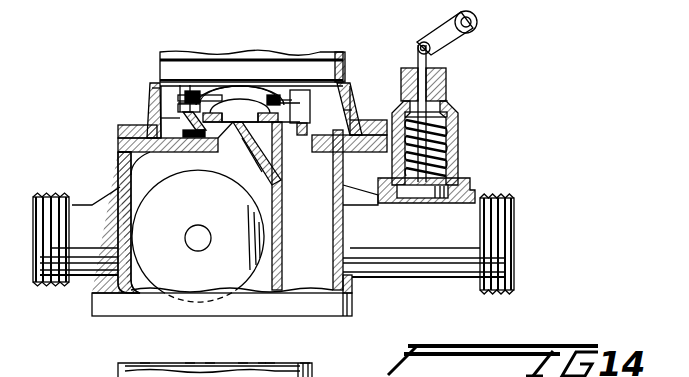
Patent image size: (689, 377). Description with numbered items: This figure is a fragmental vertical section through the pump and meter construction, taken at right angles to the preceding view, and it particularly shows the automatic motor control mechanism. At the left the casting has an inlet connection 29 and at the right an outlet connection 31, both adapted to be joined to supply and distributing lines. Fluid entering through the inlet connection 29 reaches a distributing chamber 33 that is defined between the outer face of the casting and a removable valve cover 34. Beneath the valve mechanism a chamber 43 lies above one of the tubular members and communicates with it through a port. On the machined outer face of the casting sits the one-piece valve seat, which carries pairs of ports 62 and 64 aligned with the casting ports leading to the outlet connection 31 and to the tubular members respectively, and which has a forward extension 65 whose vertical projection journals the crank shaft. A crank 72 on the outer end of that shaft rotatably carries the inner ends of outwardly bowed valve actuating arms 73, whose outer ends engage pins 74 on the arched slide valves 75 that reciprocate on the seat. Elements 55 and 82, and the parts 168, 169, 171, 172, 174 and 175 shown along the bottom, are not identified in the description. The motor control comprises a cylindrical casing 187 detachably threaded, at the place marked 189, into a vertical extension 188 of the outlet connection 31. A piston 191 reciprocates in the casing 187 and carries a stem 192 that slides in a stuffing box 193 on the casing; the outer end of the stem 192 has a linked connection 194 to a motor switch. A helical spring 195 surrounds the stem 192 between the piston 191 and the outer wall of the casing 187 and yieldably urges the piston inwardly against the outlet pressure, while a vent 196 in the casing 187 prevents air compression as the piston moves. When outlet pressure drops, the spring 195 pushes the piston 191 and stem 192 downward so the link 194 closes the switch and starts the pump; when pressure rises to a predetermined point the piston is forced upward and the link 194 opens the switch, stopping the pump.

The inlet connection 29 is at (84, 212).
The outlet connection 31 is at (513, 207).
The distributing chamber 33 is at (348, 110).
The valve cover 34 is at (148, 94).
The chamber 43 is at (307, 219).
The float 55 is at (240, 288).
The ports 62 is at (258, 140).
The ports 64 is at (305, 127).
The extension 65 is at (226, 140).
The crank 72 is at (165, 118).
The valve actuating arms 73 is at (222, 98).
The pins 74 is at (278, 100).
The slide valves 75 is at (283, 112).
The cover 82 is at (165, 68).
The base member 168 is at (268, 372).
The base end cap 169 is at (208, 372).
The base rib 171 is at (262, 372).
The base plate 172 is at (192, 372).
The base wall 174 is at (243, 372).
The base flange 175 is at (148, 376).
The cylindrical casing 187 is at (456, 160).
The vertical extension 188 is at (468, 190).
The threaded connection 189 is at (395, 195).
The piston 191 is at (435, 205).
The stem 192 is at (445, 85).
The stuffing box 193 is at (398, 72).
The linked connection 194 is at (468, 36).
The helical spring 195 is at (448, 135).
The vent 196 is at (450, 112).